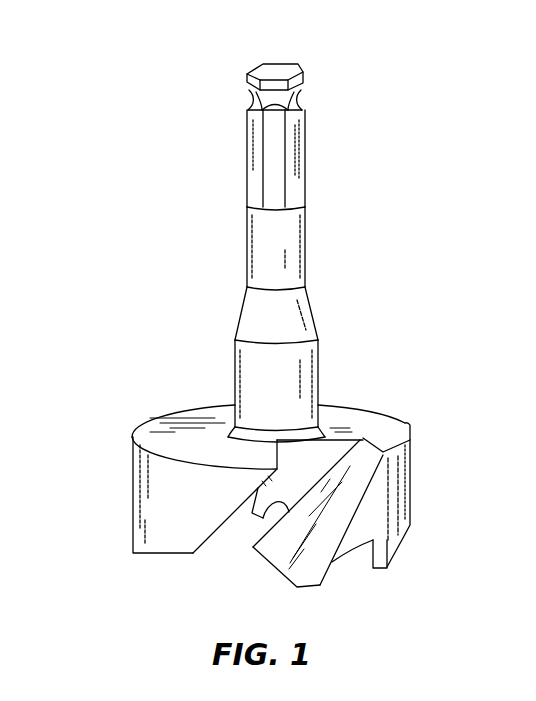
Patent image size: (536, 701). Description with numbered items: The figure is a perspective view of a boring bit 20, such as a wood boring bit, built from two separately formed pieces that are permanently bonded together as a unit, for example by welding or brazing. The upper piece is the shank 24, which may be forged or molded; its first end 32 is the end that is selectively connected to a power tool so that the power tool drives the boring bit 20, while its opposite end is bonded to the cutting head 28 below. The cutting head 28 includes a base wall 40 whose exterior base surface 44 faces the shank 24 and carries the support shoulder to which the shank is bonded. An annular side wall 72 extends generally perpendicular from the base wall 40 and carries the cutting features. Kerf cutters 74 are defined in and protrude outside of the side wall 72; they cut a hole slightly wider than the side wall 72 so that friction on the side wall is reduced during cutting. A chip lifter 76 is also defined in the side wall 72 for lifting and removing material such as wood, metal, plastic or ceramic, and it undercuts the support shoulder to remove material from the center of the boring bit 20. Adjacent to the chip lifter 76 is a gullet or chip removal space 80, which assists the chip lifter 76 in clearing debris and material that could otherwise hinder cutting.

The boring bit 20 is at (356, 175).
The shank 24 is at (237, 232).
The first end 32 is at (263, 68).
The cutting head 28 is at (123, 531).
The exterior base surface 44 is at (210, 413).
The base wall 40 is at (353, 442).
The side wall 72 is at (400, 460).
The kerf cutters 74 is at (397, 554).
The chip lifter 76 is at (267, 553).
The chip removal space 80 is at (227, 549).